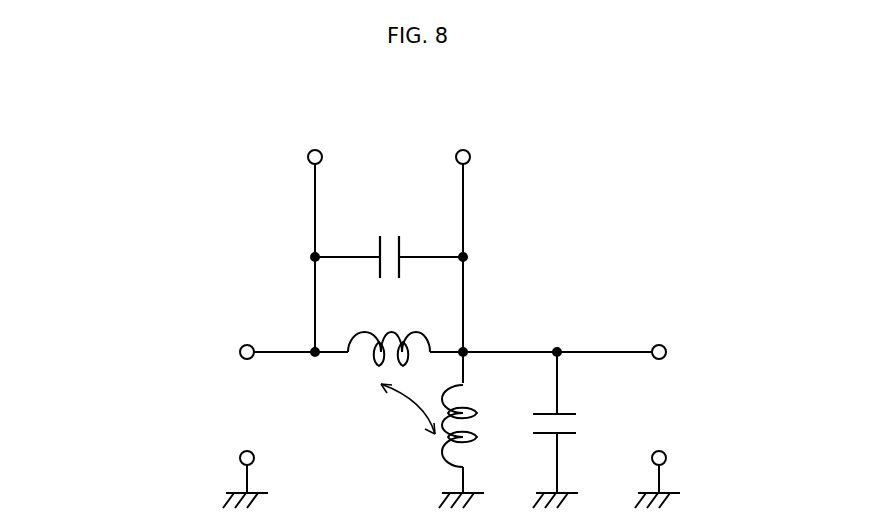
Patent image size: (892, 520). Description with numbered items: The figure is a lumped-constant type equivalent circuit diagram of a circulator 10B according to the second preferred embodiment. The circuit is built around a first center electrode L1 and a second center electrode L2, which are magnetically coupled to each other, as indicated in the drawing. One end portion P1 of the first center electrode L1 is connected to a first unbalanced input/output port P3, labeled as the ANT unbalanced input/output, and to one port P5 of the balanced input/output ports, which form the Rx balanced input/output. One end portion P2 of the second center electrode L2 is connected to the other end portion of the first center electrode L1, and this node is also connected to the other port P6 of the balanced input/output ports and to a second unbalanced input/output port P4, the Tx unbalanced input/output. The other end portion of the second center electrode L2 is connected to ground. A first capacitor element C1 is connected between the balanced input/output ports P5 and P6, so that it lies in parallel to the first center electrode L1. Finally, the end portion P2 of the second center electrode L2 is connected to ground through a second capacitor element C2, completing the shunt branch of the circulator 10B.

The circulator 10B is at (218, 185).
The one end portion of the first center electrode P1 is at (298, 334).
The one end portion of the second center electrode P2 is at (479, 334).
The first unbalanced input/output port P3 is at (233, 335).
The second unbalanced input/output port P4 is at (658, 335).
The one port of the balanced input/output ports P5 is at (314, 143).
The other port of the balanced input/output ports P6 is at (464, 143).
The first capacitor element C1 is at (387, 241).
The second capacitor element C2 is at (571, 427).
The first center electrode L1 is at (389, 334).
The second center electrode L2 is at (475, 426).